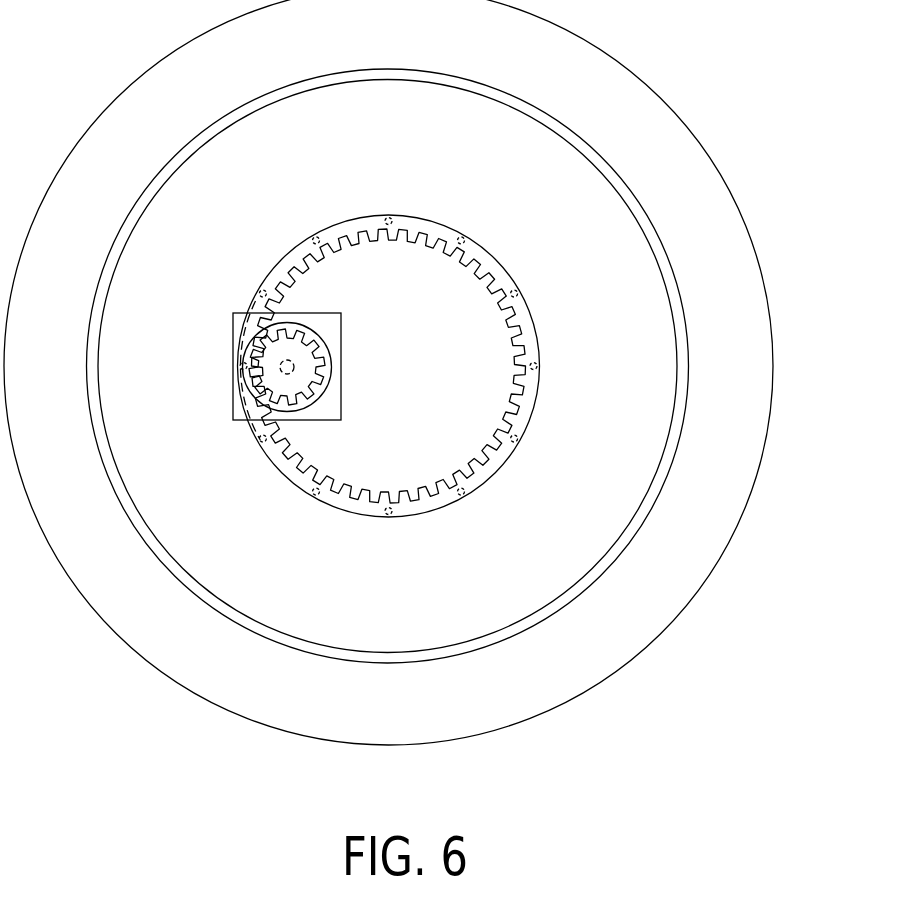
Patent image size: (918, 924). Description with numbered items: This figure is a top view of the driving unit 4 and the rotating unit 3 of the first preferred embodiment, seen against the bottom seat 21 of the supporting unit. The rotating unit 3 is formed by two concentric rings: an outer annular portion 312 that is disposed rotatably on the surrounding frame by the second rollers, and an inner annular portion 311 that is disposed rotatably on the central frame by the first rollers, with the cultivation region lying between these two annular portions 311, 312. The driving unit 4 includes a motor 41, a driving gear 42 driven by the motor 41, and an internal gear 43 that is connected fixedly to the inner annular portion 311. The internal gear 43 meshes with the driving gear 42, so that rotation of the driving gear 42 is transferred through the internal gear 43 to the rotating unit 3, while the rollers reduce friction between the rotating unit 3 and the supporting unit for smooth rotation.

The rotating unit 3 is at (437, 356).
The outer annular portion 312 is at (637, 200).
The inner annular portion 311 is at (513, 293).
The internal gear 43 is at (432, 220).
The driving unit 4 is at (295, 404).
The motor 41 is at (240, 348).
The driving gear 42 is at (330, 392).
The bottom seat 21 is at (588, 685).